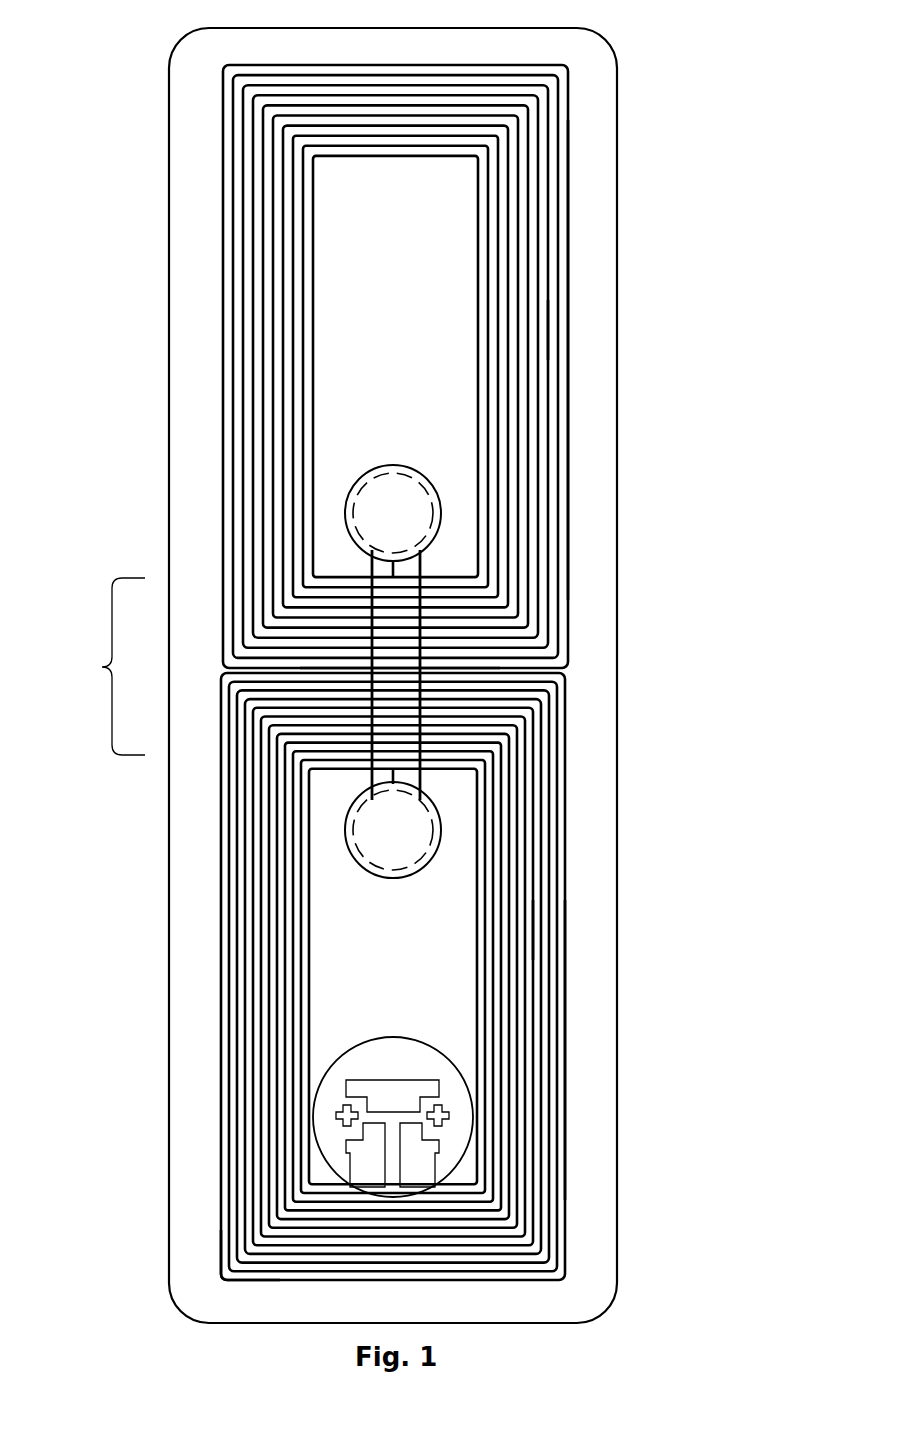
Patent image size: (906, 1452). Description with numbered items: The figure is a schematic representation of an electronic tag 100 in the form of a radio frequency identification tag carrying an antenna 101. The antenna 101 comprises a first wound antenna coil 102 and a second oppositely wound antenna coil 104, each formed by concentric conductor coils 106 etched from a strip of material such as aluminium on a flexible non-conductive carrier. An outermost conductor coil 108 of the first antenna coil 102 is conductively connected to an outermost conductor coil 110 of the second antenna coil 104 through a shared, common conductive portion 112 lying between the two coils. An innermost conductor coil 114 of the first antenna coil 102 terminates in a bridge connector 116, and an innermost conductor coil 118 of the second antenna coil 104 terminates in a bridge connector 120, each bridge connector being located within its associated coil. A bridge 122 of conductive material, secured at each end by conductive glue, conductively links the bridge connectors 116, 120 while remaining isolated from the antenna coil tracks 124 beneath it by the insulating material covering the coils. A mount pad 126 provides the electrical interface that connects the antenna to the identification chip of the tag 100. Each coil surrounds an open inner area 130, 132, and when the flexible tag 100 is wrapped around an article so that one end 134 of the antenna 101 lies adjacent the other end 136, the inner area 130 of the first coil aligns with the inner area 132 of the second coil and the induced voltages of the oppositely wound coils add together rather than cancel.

The electronic tag 100 is at (615, 50).
The antenna 101 is at (587, 160).
The first wound antenna coil 102 is at (407, 345).
The second oppositely wound antenna coil 104 is at (406, 1009).
The concentric conductor coils 106 is at (563, 1037).
The outermost conductor coil of the first antenna coil 108 is at (567, 547).
The outermost conductor coil of the second antenna coil 110 is at (225, 707).
The shared, common conductive portion 112 is at (565, 676).
The innermost conductor coil of the first antenna coil 114 is at (482, 330).
The bridge connector 116 is at (435, 492).
The innermost conductor coil of the second antenna coil 118 is at (477, 927).
The bridge connector 120 is at (442, 834).
The bridge 122 is at (370, 777).
The antenna coil tracks 124 is at (100, 667).
The mount pad 126 is at (317, 1125).
The inner area of the first antenna coil 130 is at (430, 262).
The inner area of the second antenna coil 132 is at (430, 1012).
The end of the antenna 134 is at (280, 66).
The end of the antenna 136 is at (278, 1282).